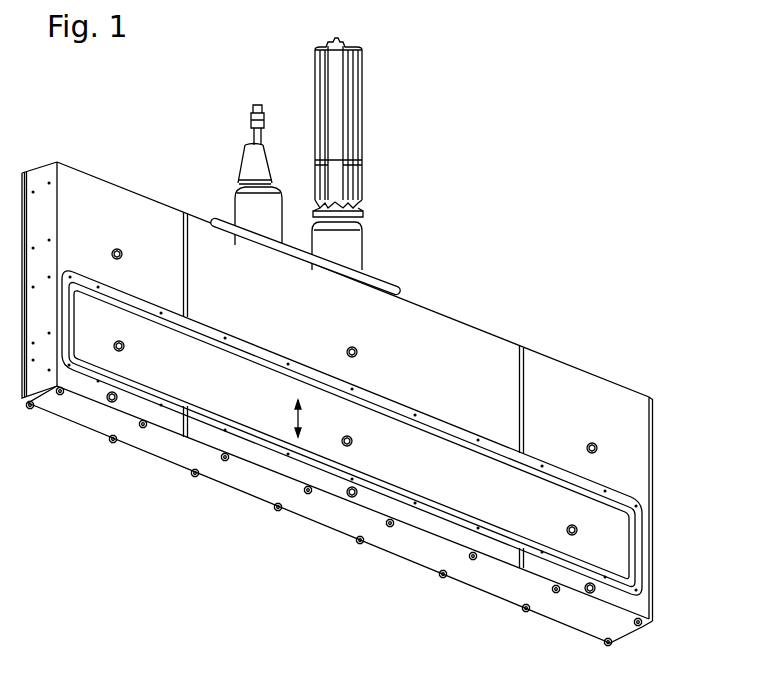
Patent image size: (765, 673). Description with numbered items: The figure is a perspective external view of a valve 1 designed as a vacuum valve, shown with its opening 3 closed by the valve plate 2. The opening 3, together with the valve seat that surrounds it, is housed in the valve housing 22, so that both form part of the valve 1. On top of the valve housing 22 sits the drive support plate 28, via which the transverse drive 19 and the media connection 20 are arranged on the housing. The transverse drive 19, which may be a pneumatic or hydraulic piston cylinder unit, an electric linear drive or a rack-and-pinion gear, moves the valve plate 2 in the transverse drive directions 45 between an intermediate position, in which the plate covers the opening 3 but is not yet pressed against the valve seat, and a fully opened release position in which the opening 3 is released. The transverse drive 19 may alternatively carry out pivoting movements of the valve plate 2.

The valve 1 is at (348, 355).
The valve plate 2 is at (612, 537).
The opening 3 is at (533, 518).
The transverse drive 19 is at (343, 112).
The media connection 20 is at (247, 148).
The valve housing 22 is at (597, 398).
The drive support plate 28 is at (392, 288).
The transverse drive directions 45 is at (292, 424).